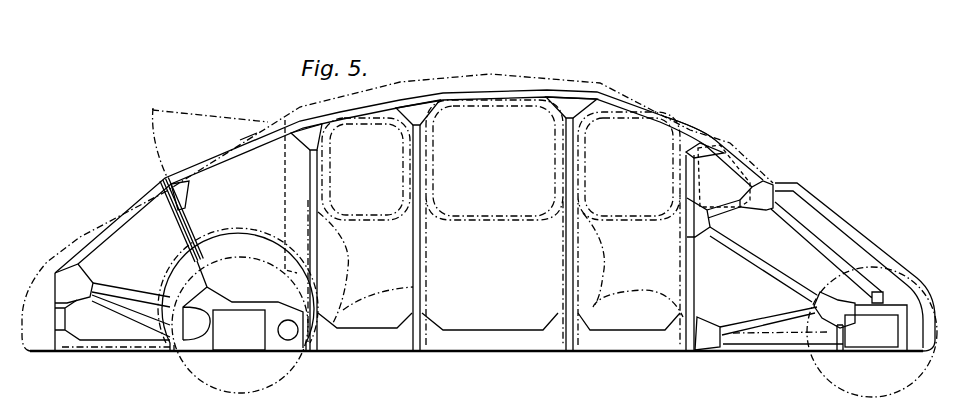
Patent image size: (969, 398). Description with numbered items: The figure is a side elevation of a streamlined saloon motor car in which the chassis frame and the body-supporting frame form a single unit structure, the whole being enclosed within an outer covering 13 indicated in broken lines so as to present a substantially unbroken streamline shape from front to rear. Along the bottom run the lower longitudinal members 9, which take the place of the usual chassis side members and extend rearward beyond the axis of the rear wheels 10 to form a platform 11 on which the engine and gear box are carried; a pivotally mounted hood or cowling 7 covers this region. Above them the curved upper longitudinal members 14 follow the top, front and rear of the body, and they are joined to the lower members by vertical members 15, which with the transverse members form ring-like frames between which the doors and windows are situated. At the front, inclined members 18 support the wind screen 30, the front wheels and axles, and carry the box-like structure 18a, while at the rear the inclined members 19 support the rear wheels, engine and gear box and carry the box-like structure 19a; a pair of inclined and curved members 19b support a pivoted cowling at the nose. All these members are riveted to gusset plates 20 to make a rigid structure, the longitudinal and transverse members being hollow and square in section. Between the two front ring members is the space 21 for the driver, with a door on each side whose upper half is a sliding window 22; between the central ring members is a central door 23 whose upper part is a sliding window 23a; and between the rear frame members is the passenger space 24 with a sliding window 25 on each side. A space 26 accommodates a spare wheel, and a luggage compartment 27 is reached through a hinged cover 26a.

The hood or cowling 7 is at (78, 247).
The lower longitudinal members 9 is at (380, 340).
The rear wheels 10 is at (200, 370).
The platform 11 is at (118, 347).
The outer covering 13 is at (537, 77).
The upper longitudinal members 14 is at (117, 238).
The vertical members 15 is at (318, 253).
The inclined members 18 is at (813, 235).
The box-like structure 18a is at (905, 335).
The inclined members 19 is at (135, 312).
The box-like structure 19a is at (272, 340).
The inclined and curved members 19b is at (867, 240).
The gusset plates 20 is at (66, 289).
The space 21 is at (653, 317).
The sliding window 22 is at (657, 150).
The central door 23 is at (513, 308).
The sliding window 23a is at (488, 127).
The space 24 is at (358, 287).
The sliding window 25 is at (378, 147).
The space 26 is at (295, 185).
The hinged cover 26a is at (212, 120).
The luggage compartment 27 is at (257, 167).
The wind screen 30 is at (732, 178).